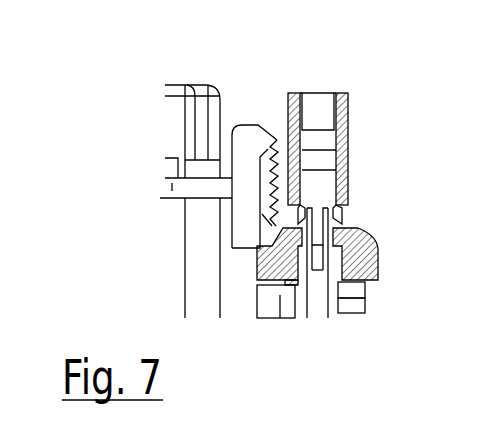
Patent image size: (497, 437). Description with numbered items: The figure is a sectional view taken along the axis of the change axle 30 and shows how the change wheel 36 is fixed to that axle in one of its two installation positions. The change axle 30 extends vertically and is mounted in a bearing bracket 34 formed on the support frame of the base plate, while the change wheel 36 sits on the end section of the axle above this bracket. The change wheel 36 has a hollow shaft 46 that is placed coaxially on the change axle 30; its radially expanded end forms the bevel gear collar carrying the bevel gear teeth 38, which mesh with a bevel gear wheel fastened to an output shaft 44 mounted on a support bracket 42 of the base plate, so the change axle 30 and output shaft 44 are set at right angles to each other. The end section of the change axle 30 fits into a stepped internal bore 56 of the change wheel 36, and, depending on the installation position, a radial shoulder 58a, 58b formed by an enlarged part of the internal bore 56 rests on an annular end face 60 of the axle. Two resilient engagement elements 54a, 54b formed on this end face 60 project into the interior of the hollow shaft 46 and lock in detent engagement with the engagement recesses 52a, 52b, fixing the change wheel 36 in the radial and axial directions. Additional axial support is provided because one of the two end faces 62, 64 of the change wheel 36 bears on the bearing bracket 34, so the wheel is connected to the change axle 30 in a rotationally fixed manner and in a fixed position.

The change axle 30 is at (336, 303).
The bearing bracket 34 is at (362, 289).
The change wheel 36 is at (366, 178).
The bevel gear teeth 38 is at (253, 147).
The support bracket 42 is at (197, 255).
The output shaft 44 is at (172, 187).
The hollow shaft 46 is at (345, 142).
The engagement recess 52a is at (342, 212).
The engagement recess 52b is at (300, 218).
The engagement element 54a is at (350, 230).
The engagement element 54b is at (288, 280).
The stepped internal bore 56 is at (338, 262).
The radial shoulder 58a is at (332, 248).
The radial shoulder 58b is at (298, 125).
The annular end face 60 is at (270, 242).
The end face 62 is at (298, 286).
The end face 64 is at (346, 95).